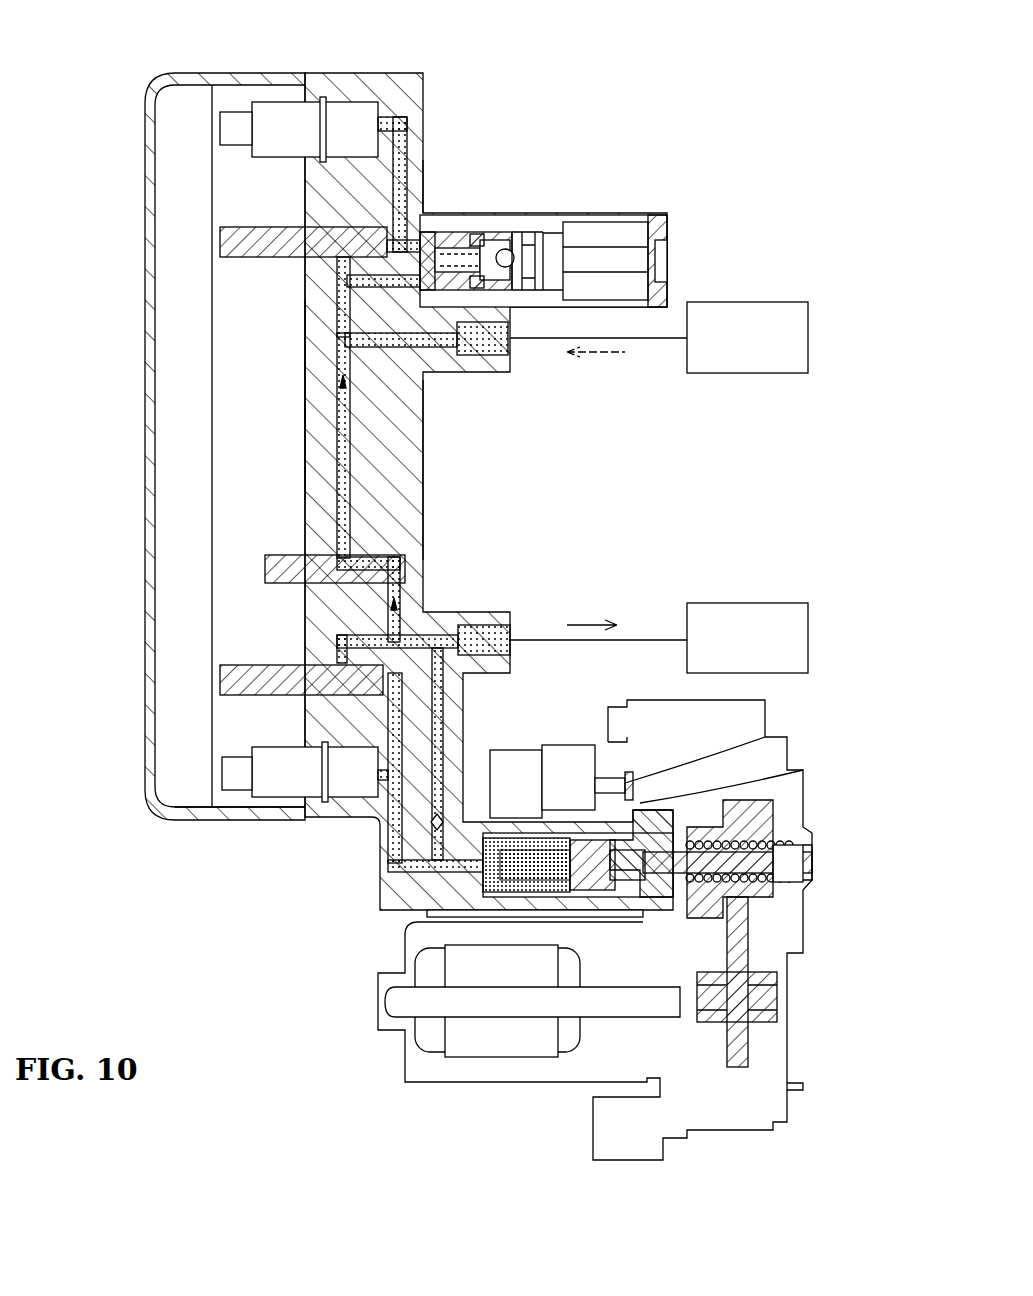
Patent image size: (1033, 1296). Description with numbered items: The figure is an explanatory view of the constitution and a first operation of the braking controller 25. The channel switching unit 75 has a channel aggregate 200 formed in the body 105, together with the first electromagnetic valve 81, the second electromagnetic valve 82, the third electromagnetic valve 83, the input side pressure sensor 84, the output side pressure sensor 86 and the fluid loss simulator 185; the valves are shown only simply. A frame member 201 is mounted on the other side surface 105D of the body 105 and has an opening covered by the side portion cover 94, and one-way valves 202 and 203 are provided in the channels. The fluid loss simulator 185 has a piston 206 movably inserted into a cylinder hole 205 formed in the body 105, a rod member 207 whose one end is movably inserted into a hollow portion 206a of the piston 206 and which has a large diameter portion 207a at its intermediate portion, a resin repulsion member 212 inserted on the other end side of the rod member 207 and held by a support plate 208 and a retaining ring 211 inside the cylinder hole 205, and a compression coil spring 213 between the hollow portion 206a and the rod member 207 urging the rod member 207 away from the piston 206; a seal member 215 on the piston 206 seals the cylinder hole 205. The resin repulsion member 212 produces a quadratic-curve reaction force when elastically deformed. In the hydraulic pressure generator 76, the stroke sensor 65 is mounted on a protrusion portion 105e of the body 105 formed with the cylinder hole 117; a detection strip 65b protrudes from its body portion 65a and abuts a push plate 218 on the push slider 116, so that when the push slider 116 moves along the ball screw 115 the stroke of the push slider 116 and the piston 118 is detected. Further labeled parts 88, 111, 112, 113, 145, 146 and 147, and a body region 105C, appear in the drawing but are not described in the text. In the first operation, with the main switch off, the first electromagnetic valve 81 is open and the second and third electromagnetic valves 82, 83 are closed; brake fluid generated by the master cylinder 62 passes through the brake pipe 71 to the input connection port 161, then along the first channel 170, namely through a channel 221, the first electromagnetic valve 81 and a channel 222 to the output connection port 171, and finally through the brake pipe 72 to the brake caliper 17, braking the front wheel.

The body 105 is at (360, 80).
The channel switching unit 75 is at (435, 112).
The side portion cover 94 is at (150, 325).
The frame member 201 is at (270, 812).
The braking controller 25 is at (322, 845).
The input side pressure sensor 84 is at (235, 128).
The output side pressure sensor 86 is at (235, 772).
The third electromagnetic valve 83 is at (235, 220).
The first electromagnetic valve 81 is at (280, 548).
The second electromagnetic valve 82 is at (235, 660).
The other side surface 105D is at (305, 440).
The channel aggregate 200 is at (425, 488).
The one-way valve 202 is at (405, 280).
The first channel 170 is at (377, 516).
The channel 221 is at (392, 471).
The housing wall 105C is at (425, 430).
The channel 222 is at (405, 590).
The one-way valve 203 is at (455, 760).
The piston 118 is at (388, 866).
The input connection port 161 is at (505, 348).
The output connection port 171 is at (510, 632).
The resin repulsion member 212 is at (668, 215).
The fluid loss simulator 185 is at (533, 180).
The compression coil spring 213 is at (436, 232).
The cylinder hole 205 is at (460, 248).
The seal member 215 is at (500, 240).
The piston 206 is at (477, 234).
The hollow portion 206a is at (535, 240).
The rod member 207 is at (590, 258).
The large diameter portion 207a is at (540, 232).
The support plate 208 is at (668, 240).
The retaining ring 211 is at (665, 220).
The master cylinder 62 is at (750, 373).
The brake pipe 71 is at (650, 338).
The brake caliper 17 is at (752, 603).
The brake pipe 72 is at (655, 640).
The hydraulic pressure generator 76 is at (451, 1112).
The protrusion portion 105e is at (504, 928).
The electric motor 88 is at (521, 1096).
The motor shaft 111 is at (640, 1010).
The gear 112 is at (760, 1045).
The push slider 116 is at (670, 765).
The cylinder hole 117 is at (480, 890).
The push plate 218 is at (650, 805).
The screw shaft 146 is at (812, 862).
The ball screw 145 is at (785, 840).
The nut 147 is at (785, 882).
The ball screw 115 is at (824, 853).
The gear 113 is at (773, 905).
The stroke sensor 65 is at (563, 733).
The body portion 65a is at (578, 770).
The detection strip 65b is at (630, 780).